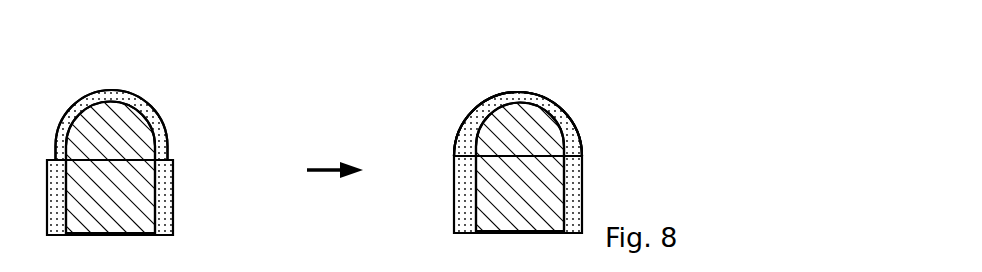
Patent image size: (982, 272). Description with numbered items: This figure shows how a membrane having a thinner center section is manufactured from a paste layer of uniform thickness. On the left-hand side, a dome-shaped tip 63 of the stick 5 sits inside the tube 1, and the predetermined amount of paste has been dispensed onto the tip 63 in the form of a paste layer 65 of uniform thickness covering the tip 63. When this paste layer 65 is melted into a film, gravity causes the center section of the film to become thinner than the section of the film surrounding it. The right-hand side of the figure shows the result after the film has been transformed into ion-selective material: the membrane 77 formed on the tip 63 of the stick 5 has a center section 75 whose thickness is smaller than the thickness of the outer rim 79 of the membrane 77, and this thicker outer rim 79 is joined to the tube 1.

The tube 1 is at (158, 203).
The stick 5 is at (96, 159).
The dome-shaped tip 63 is at (124, 143).
The paste layer 65 is at (112, 90).
The center section 75 is at (522, 97).
The membrane 77 is at (566, 25).
The outer rim 79 is at (568, 133).